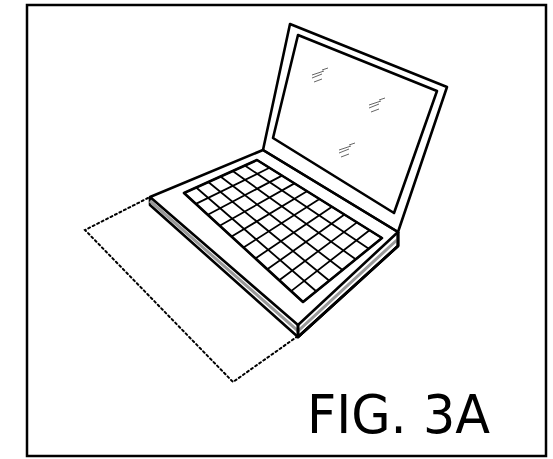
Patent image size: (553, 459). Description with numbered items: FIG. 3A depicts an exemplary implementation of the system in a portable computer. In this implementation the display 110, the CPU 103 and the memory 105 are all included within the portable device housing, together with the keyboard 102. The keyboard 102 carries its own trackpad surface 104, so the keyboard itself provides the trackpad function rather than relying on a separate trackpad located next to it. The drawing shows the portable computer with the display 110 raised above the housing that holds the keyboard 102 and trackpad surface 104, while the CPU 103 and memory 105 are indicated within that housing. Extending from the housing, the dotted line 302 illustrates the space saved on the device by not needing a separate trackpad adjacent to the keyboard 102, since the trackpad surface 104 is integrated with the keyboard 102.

The keyboard 102 is at (165, 183).
The trackpad surface 104 is at (267, 148).
The display 110 is at (455, 154).
The CPU 103 is at (390, 267).
The memory 105 is at (388, 284).
The dotted line 302 is at (127, 273).